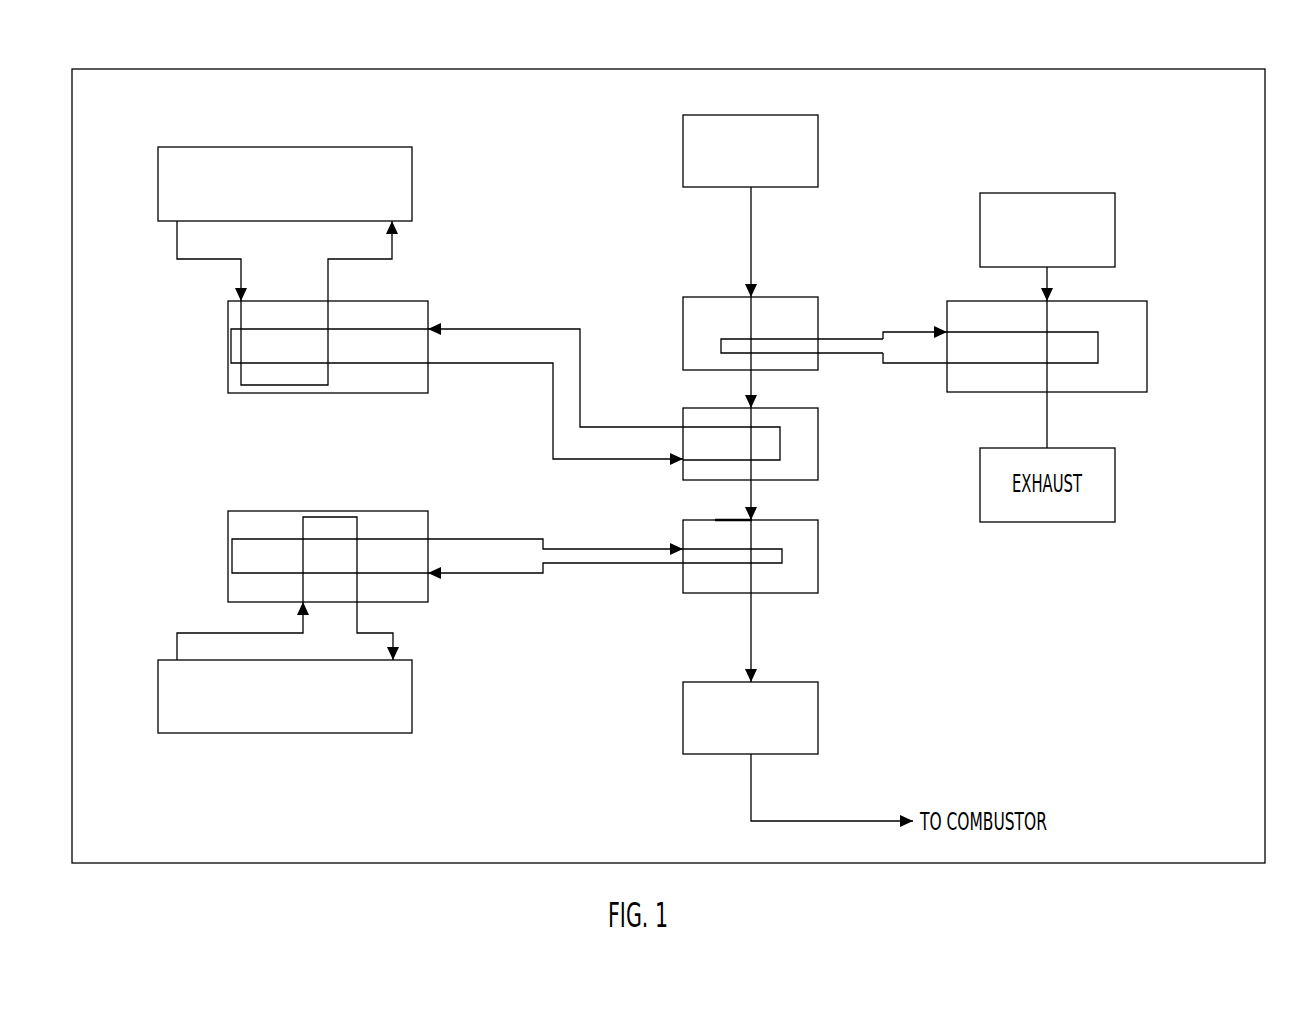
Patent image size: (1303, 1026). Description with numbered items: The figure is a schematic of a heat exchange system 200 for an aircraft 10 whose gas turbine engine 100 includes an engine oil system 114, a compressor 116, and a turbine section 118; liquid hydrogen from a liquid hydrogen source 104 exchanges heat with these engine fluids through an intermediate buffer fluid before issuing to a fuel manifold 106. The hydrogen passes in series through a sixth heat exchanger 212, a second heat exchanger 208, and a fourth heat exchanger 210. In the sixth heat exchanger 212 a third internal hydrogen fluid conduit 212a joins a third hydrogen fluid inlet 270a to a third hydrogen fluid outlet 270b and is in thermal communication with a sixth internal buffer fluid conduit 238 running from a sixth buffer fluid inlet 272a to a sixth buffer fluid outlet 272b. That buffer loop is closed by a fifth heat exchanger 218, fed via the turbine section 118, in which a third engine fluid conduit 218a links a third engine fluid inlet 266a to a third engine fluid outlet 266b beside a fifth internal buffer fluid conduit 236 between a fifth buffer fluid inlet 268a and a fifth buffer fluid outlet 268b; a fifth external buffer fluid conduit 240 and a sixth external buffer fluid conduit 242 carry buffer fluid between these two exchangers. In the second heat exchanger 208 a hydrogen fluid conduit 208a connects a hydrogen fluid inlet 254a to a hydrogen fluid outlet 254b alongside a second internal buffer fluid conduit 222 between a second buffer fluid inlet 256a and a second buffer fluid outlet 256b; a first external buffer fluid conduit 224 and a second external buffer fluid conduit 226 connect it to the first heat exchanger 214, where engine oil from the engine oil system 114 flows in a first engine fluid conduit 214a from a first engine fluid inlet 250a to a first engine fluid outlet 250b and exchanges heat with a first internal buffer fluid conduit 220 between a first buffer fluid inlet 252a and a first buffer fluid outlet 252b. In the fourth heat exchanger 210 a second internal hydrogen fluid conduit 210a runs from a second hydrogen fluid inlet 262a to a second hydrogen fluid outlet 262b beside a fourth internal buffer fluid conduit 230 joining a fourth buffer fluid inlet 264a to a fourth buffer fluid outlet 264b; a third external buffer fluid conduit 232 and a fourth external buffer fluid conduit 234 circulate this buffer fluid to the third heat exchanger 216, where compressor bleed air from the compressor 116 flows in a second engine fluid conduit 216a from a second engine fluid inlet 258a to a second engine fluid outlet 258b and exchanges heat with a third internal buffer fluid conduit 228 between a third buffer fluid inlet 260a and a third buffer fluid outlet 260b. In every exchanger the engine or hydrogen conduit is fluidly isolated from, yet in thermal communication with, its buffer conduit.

The gas turbine engine 10 is at (920, 48).
The gas turbine engine 100 is at (128, 108).
The liquid hydrogen source 104 is at (766, 163).
The fuel manifold 106 is at (766, 730).
The engine oil system 114 is at (299, 198).
The compressor 116 is at (301, 710).
The turbine section 118 is at (1063, 243).
The heat exchange system 200 is at (553, 176).
The second heat exchanger 208 is at (820, 446).
The hydrogen fluid conduit 208a is at (752, 421).
The fourth heat exchanger 210 is at (822, 565).
The second internal hydrogen fluid conduit 210a is at (752, 538).
The sixth heat exchanger 212 is at (797, 297).
The third internal hydrogen fluid conduit 212a is at (750, 320).
The first heat exchanger 214 is at (430, 318).
The first engine fluid conduit 214a is at (240, 318).
The third heat exchanger 216 is at (255, 511).
The second engine fluid conduit 216a is at (357, 528).
The fifth heat exchanger 218 is at (1130, 300).
The third engine fluid conduit 218a is at (1050, 330).
The first internal buffer fluid conduit 220 is at (371, 365).
The second internal buffer fluid conduit 222 is at (725, 427).
The first external buffer fluid conduit 224 is at (572, 329).
The second external buffer fluid conduit 226 is at (622, 460).
The third internal buffer fluid conduit 228 is at (243, 539).
The fourth internal buffer fluid conduit 230 is at (715, 565).
The third external buffer fluid conduit 232 is at (560, 549).
The fourth external buffer fluid conduit 234 is at (563, 562).
The fifth internal buffer fluid conduit 236 is at (970, 330).
The sixth internal buffer fluid conduit 238 is at (802, 338).
The fifth external buffer fluid conduit 240 is at (865, 339).
The sixth external buffer fluid conduit 242 is at (878, 353).
The first engine fluid inlet 250a is at (243, 299).
The first engine fluid outlet 250b is at (329, 300).
The first buffer fluid inlet 252a is at (432, 329).
The first buffer fluid outlet 252b is at (430, 366).
The hydrogen fluid inlet 254a is at (755, 404).
The hydrogen fluid outlet 254b is at (753, 484).
The second buffer fluid inlet 256a is at (683, 462).
The second buffer fluid outlet 256b is at (683, 427).
The second engine fluid inlet 258a is at (296, 606).
The second engine fluid outlet 258b is at (362, 606).
The third buffer fluid inlet 260a is at (432, 576).
The third buffer fluid outlet 260b is at (430, 539).
The second hydrogen fluid inlet 262a is at (757, 519).
The second hydrogen fluid outlet 262b is at (753, 595).
The fourth buffer fluid inlet 264a is at (680, 547).
The fourth buffer fluid outlet 264b is at (682, 565).
The third engine fluid inlet 266a is at (1044, 300).
The third engine fluid outlet 266b is at (1048, 394).
The fifth buffer fluid inlet 268a is at (944, 330).
The fifth buffer fluid outlet 268b is at (945, 364).
The third hydrogen fluid inlet 270a is at (757, 296).
The third hydrogen fluid outlet 270b is at (740, 377).
The sixth buffer fluid inlet 272a is at (818, 357).
The sixth buffer fluid outlet 272b is at (825, 339).